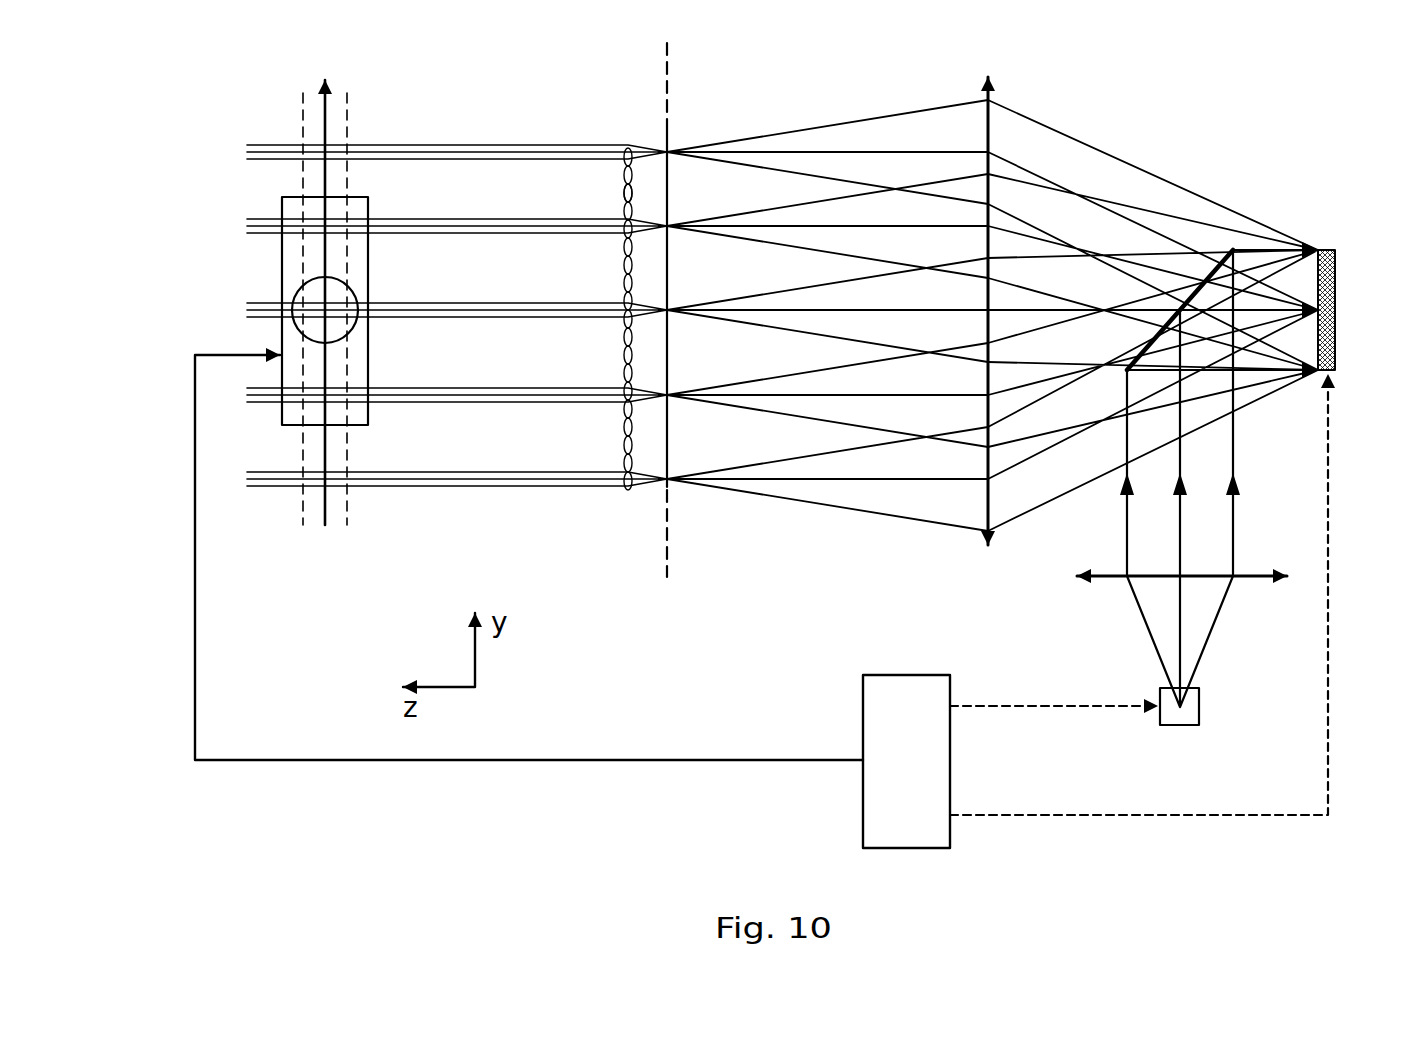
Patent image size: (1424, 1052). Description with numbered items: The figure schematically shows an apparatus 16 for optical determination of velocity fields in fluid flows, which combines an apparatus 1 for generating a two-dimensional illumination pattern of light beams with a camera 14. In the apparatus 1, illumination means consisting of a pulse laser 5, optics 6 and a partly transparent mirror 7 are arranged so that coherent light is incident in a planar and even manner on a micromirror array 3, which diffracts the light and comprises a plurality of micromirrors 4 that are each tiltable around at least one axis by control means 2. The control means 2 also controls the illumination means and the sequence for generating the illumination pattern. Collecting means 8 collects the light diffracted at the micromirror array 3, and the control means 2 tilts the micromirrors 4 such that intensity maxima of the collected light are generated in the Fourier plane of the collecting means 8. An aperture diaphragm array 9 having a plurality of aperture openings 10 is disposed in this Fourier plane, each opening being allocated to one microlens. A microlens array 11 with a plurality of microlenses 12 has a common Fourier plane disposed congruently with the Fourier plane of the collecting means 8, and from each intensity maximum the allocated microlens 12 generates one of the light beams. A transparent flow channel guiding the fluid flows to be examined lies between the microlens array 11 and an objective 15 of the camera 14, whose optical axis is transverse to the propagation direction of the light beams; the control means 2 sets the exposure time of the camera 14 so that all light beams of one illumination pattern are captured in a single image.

The apparatus for generating a two-dimensional illumination pattern 1 is at (268, 787).
The control means 2 is at (905, 675).
The micromirror array 3 is at (1336, 305).
The micromirrors 4 is at (1306, 280).
The pulse laser 5 is at (1200, 705).
The optics 6 is at (1245, 578).
The partly transparent mirror 7 is at (1143, 350).
The collecting means 8 is at (990, 137).
The aperture diaphragm array 9 is at (670, 448).
The aperture openings 10 is at (680, 267).
The microlens array 11 is at (626, 436).
The microlenses 12 is at (616, 184).
The camera 14 is at (282, 278).
The objective 15 is at (295, 300).
The apparatus for optical determination of velocity fields in fluid flows 16 is at (175, 743).